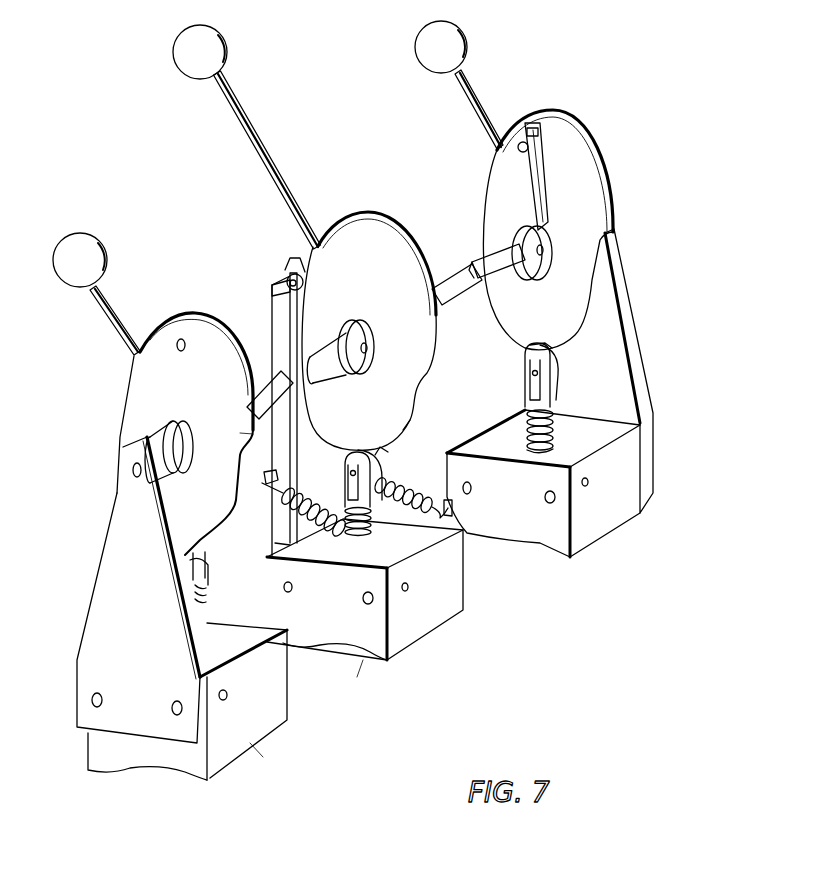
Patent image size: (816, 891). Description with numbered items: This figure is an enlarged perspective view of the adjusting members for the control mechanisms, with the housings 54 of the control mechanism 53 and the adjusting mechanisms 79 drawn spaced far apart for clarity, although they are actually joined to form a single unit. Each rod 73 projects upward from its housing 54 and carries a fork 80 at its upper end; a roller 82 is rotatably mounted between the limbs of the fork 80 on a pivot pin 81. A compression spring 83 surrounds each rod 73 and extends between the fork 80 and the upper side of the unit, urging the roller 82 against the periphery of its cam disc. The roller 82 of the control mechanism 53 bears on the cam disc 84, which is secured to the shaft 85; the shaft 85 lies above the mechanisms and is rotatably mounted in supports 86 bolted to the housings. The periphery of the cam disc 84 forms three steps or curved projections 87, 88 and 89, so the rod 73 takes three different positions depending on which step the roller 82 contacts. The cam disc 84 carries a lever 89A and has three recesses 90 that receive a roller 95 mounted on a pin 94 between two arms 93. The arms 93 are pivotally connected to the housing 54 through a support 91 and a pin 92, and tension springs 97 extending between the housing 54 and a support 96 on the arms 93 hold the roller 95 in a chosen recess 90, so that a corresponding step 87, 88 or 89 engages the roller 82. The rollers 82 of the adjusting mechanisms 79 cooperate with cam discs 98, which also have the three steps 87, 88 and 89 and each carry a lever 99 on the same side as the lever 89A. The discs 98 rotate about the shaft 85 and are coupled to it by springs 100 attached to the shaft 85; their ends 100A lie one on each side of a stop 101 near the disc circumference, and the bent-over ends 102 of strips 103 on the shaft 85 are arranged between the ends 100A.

The control mechanism 53 is at (363, 660).
The housing 54 is at (250, 743).
The rod 73 is at (522, 443).
The adjusting mechanism 79 is at (87, 763).
The fork 80 is at (343, 497).
The pivot pin 81 is at (533, 373).
The roller 82 is at (373, 462).
The compression spring 83 is at (373, 530).
The cam disc 84 is at (373, 210).
The shaft 85 is at (477, 263).
The support 86 is at (117, 493).
The step 87 is at (360, 452).
The step 88 is at (404, 430).
The step 89 is at (251, 433).
The lever 89A is at (247, 113).
The recess 90 is at (320, 310).
The support 91 is at (340, 527).
The pin 92 is at (277, 543).
The arm 93 is at (278, 455).
The pin 94 is at (272, 298).
The roller 95 is at (295, 272).
The support 96 is at (287, 487).
The tension spring 97 is at (387, 478).
The cam disc 98 is at (199, 312).
The lever 99 is at (97, 301).
The spring 100 is at (548, 190).
The spring end 100A is at (528, 120).
The stop 101 is at (523, 152).
The bent-over end 102 is at (517, 170).
The strip 103 is at (518, 200).